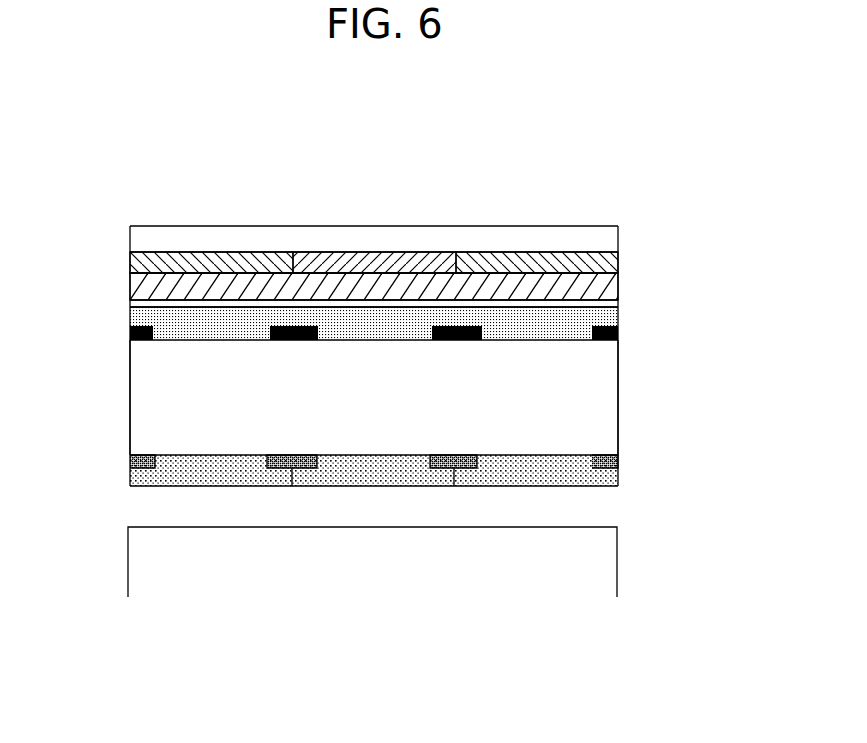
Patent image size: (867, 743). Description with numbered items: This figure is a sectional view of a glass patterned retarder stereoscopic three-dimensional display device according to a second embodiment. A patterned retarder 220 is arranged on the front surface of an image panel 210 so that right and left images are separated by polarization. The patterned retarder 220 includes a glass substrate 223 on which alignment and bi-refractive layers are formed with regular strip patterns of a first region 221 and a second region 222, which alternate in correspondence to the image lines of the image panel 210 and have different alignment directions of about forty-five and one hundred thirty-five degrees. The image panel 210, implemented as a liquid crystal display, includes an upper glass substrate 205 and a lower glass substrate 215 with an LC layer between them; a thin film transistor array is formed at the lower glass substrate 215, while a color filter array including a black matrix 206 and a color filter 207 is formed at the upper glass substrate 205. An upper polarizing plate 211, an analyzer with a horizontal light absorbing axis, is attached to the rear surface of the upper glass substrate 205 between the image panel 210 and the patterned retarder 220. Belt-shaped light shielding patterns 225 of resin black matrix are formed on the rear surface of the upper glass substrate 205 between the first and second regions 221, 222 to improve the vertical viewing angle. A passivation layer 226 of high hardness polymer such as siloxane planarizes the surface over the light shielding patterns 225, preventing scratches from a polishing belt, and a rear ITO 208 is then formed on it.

The patterned retarder 220 is at (547, 167).
The first region 221 is at (528, 262).
The second region 222 is at (386, 256).
The glass substrate 223 is at (457, 237).
The upper polarizing plate 211 is at (612, 283).
The rear ITO 208 is at (612, 304).
The passivation layer 226 is at (612, 317).
The light shielding patterns 225 is at (612, 338).
The upper glass substrate 205 is at (610, 401).
The black matrix 206 is at (618, 460).
The color filter 207 is at (618, 479).
The image panel 210 is at (700, 392).
The lower glass substrate 215 is at (608, 556).